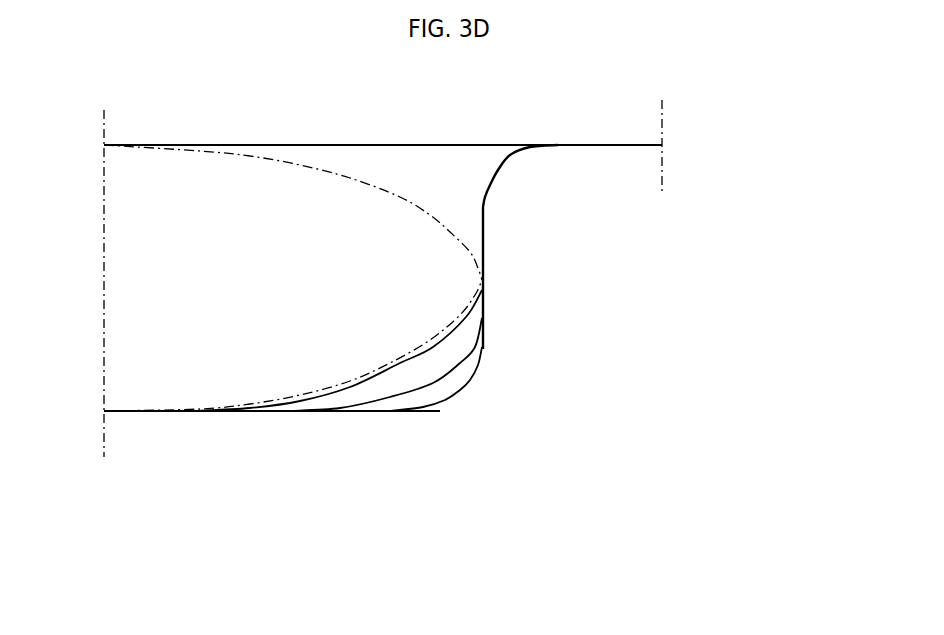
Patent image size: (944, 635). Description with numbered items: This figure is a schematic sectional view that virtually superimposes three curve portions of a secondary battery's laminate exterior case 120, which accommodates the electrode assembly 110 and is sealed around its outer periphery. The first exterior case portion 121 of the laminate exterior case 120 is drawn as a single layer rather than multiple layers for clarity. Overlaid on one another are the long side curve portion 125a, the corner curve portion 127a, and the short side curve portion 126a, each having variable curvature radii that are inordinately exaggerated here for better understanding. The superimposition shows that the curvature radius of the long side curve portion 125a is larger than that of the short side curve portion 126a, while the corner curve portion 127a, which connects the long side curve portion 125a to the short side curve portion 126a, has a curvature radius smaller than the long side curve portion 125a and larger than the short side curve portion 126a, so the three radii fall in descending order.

The electrode assembly 110 is at (232, 170).
The laminate exterior case 120 is at (584, 140).
The first exterior case portion 121 is at (427, 145).
The long side curve portion 125a is at (333, 395).
The short side curve portion 126a is at (426, 409).
The corner curve portion 127a is at (384, 404).